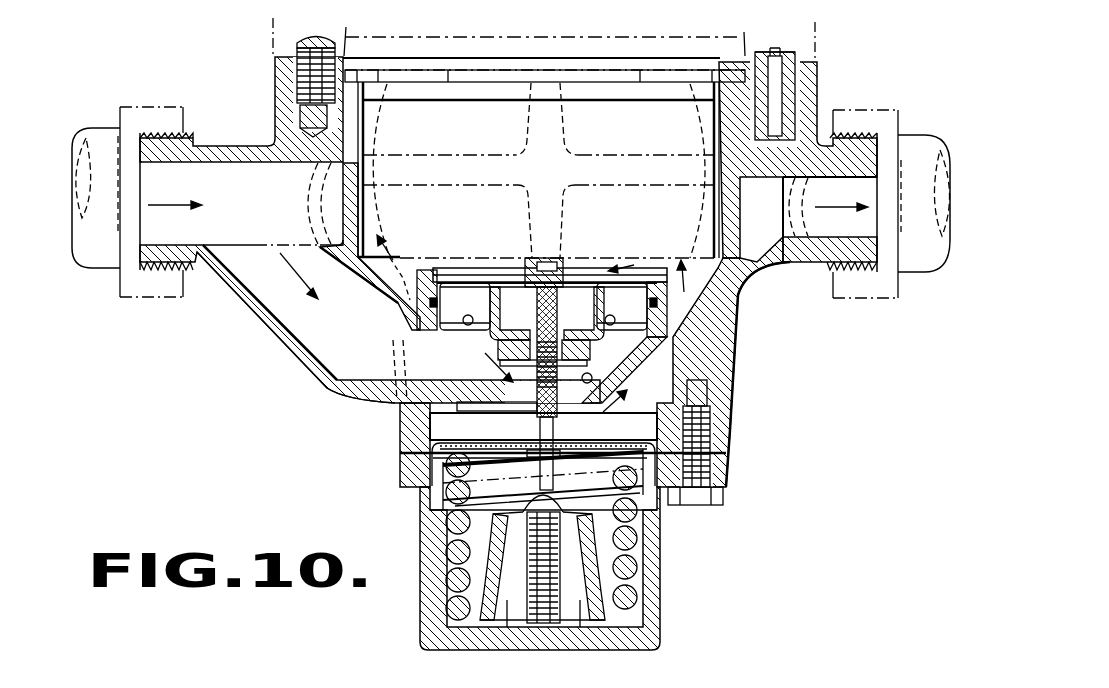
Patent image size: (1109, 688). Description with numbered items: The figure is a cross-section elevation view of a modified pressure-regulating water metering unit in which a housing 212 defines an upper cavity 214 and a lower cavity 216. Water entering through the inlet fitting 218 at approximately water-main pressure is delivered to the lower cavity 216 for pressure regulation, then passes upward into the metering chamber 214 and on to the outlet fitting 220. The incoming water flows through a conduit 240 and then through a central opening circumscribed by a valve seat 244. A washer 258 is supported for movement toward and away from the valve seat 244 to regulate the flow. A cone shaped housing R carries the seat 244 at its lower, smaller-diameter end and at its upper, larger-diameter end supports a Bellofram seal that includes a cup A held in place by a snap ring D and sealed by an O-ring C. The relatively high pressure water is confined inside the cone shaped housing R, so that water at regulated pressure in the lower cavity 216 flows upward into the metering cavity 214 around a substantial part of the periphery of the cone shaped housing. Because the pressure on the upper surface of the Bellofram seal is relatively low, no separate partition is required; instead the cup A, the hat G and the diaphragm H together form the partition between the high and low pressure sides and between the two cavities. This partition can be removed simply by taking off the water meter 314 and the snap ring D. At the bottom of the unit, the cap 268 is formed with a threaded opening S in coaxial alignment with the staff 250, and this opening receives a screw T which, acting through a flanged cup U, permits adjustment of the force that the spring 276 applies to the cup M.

The water meter 314 is at (562, 53).
The inlet fitting 218 is at (204, 145).
The outlet fitting 220 is at (806, 264).
The upper cavity 214 is at (653, 143).
The housing 212 is at (301, 376).
The conduit 240 is at (271, 315).
The snap ring D is at (449, 270).
The cup A is at (441, 305).
The hat G is at (594, 303).
The O-ring C is at (441, 322).
The diaphragm H is at (581, 337).
The cone shaped housing R is at (638, 347).
The valve seat 244 is at (605, 387).
The washer 258 is at (498, 349).
The lower cavity 216 is at (583, 431).
The staff 250 is at (535, 412).
The cup M is at (472, 441).
The cap 268 is at (661, 573).
The spring 276 is at (655, 542).
The flanged cup U is at (597, 536).
The threaded opening S is at (530, 541).
The screw T is at (553, 625).